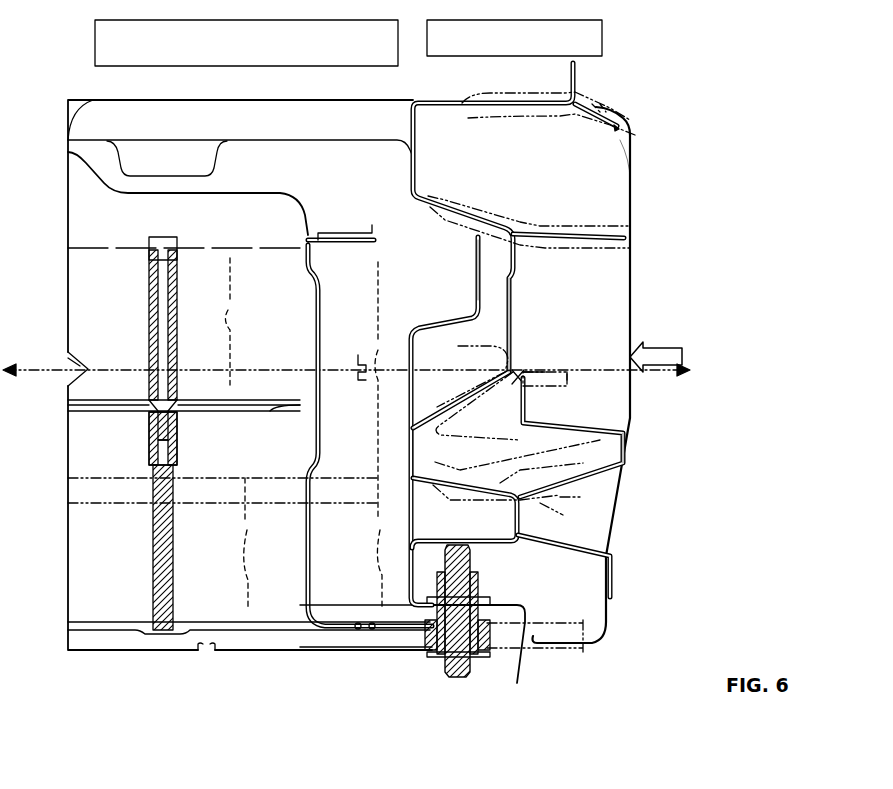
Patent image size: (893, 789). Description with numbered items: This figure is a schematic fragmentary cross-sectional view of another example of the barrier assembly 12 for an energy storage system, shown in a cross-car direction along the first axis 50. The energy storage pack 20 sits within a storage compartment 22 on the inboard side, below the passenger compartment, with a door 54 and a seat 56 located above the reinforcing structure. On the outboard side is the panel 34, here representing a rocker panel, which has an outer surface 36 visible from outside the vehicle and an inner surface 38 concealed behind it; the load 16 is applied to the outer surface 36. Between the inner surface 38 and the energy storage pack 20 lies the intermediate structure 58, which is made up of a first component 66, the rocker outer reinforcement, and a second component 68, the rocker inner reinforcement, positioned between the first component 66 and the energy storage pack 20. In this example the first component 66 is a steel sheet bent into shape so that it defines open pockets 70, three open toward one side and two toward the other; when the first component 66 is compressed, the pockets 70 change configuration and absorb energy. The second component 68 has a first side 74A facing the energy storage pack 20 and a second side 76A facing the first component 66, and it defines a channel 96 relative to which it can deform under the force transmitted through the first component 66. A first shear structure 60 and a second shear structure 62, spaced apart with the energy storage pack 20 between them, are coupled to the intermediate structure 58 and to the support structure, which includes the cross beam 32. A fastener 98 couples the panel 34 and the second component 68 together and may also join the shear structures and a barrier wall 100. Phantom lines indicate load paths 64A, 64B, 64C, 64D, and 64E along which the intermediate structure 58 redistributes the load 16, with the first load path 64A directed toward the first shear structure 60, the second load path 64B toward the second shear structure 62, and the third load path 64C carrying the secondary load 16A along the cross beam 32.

The barrier assembly 12 is at (713, 40).
The load 16 is at (666, 347).
The secondary load 16A is at (556, 386).
The energy storage pack 20 is at (76, 308).
The storage compartment 22 is at (262, 207).
The cross beam 32 is at (86, 514).
The panel 34 is at (614, 520).
The outer surface 36 is at (636, 187).
The inner surface 38 is at (626, 166).
The first axis 50 is at (30, 380).
The door 54 is at (527, 48).
The seat 56 is at (257, 54).
The intermediate structure 58 is at (628, 290).
The first shear structure 60 is at (68, 140).
The second shear structure 62 is at (118, 652).
The first load path 64A is at (605, 104).
The second load path 64B is at (590, 658).
The third load path 64C is at (560, 510).
The fourth load path 64D is at (518, 216).
The fifth load path 64E is at (470, 346).
The first component 66 is at (597, 117).
The second component 68 is at (512, 310).
The pocket 70 is at (418, 168).
The first side of the second component 74A is at (485, 258).
The second side of the second component 76A is at (512, 285).
The channel 96 is at (510, 318).
The fastener 98 is at (445, 676).
The barrier wall 100 is at (452, 316).